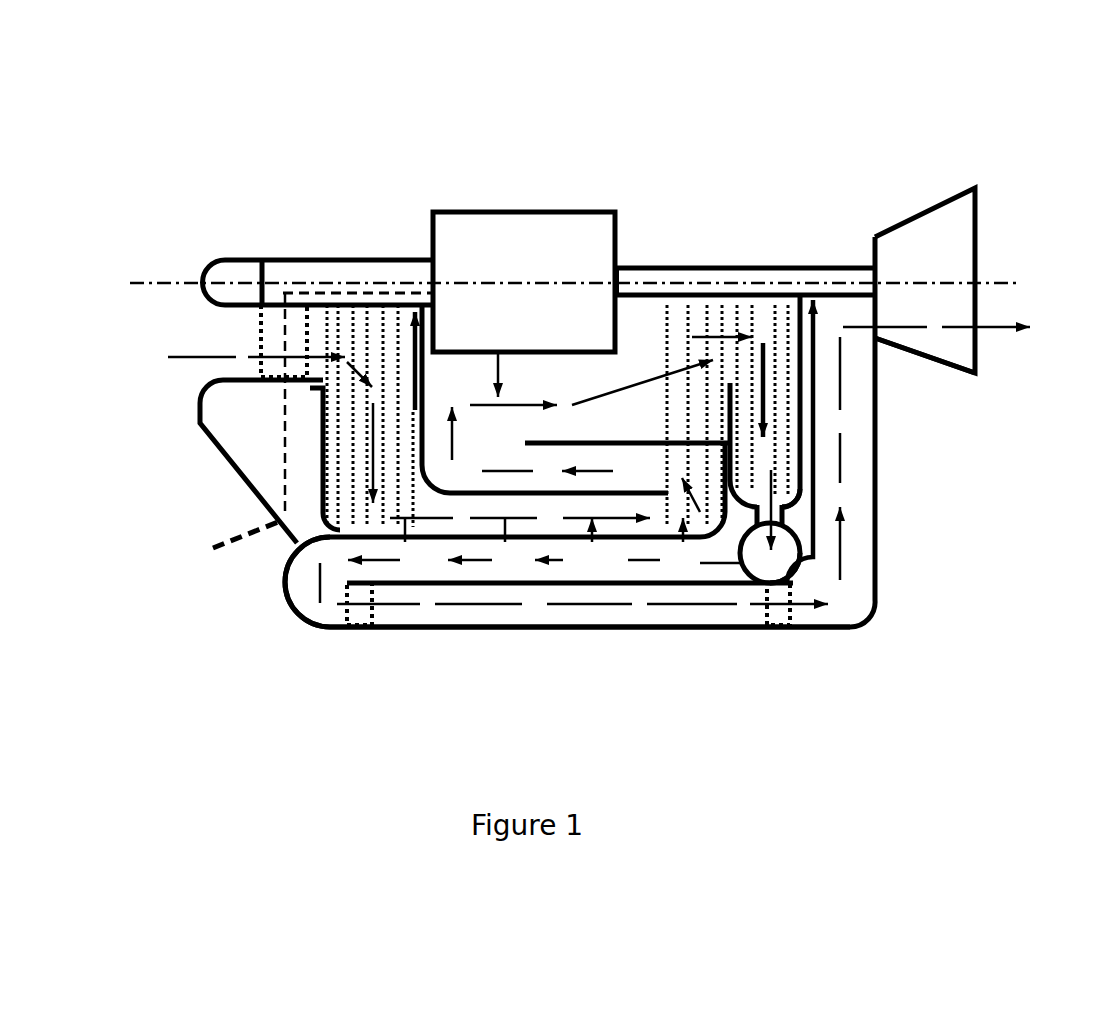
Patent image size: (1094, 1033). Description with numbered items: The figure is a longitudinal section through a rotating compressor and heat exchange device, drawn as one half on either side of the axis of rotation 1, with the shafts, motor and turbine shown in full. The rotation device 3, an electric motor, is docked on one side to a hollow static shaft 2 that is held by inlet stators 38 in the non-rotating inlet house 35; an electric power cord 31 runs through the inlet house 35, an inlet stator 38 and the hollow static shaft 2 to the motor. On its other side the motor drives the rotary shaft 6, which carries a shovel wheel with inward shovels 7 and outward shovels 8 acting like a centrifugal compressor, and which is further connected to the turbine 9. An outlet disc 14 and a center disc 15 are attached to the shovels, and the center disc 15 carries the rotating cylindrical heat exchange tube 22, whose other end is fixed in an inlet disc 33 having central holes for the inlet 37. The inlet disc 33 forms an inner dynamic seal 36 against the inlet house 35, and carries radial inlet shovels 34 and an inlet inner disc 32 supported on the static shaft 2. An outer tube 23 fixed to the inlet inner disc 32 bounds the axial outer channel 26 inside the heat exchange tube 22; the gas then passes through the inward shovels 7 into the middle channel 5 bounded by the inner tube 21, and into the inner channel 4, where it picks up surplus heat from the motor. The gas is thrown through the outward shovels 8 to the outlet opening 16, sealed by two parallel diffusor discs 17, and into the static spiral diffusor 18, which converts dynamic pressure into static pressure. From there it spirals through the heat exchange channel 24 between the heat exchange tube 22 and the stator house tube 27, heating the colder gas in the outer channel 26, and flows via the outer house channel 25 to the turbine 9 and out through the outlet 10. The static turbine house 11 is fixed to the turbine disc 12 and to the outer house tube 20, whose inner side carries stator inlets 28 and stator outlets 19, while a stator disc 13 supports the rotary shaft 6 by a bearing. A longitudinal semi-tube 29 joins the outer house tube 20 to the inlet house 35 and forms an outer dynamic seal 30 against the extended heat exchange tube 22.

The axis of rotation 1 is at (579, 283).
The hollow static shaft 2 is at (295, 258).
The rotation device 3 is at (493, 243).
The inner channel 4 is at (545, 383).
The middle channel 5 is at (550, 470).
The rotary shaft 6 is at (648, 268).
The inward shovels 7 is at (717, 487).
The outward shovels 8 is at (754, 407).
The turbine 9 is at (923, 243).
The outlet 10 is at (955, 323).
The turbine house 11 is at (925, 360).
The turbine disc 12 is at (880, 415).
The stator disc 13 is at (813, 412).
The outlet disc 14 is at (733, 403).
The center disc 15 is at (780, 492).
The outlet opening 16 is at (787, 516).
The diffusor discs 17 is at (745, 565).
The spiral diffusor 18 is at (800, 577).
The stator outlets 19 is at (782, 622).
The outer house tube 20 is at (720, 628).
The inner tube 21 is at (660, 445).
The heat exchange tube 22 is at (643, 560).
The outer tube 23 is at (645, 498).
The heat exchange channel 24 is at (597, 565).
The outer house channel 25 is at (530, 603).
The outer channel 26 is at (463, 518).
The stator house tube 27 is at (428, 585).
The stator inlets 28 is at (355, 613).
The semi-tube 29 is at (281, 593).
The outer dynamic seal 30 is at (317, 532).
The electric power cord 31 is at (228, 541).
The inlet inner disc 32 is at (353, 407).
The inlet disc 33 is at (414, 414).
The inlet shovels 34 is at (327, 398).
The inlet house 35 is at (202, 419).
The inner dynamic seal 36 is at (312, 383).
The inlet 37 is at (238, 355).
The inlet stators 38 is at (262, 322).